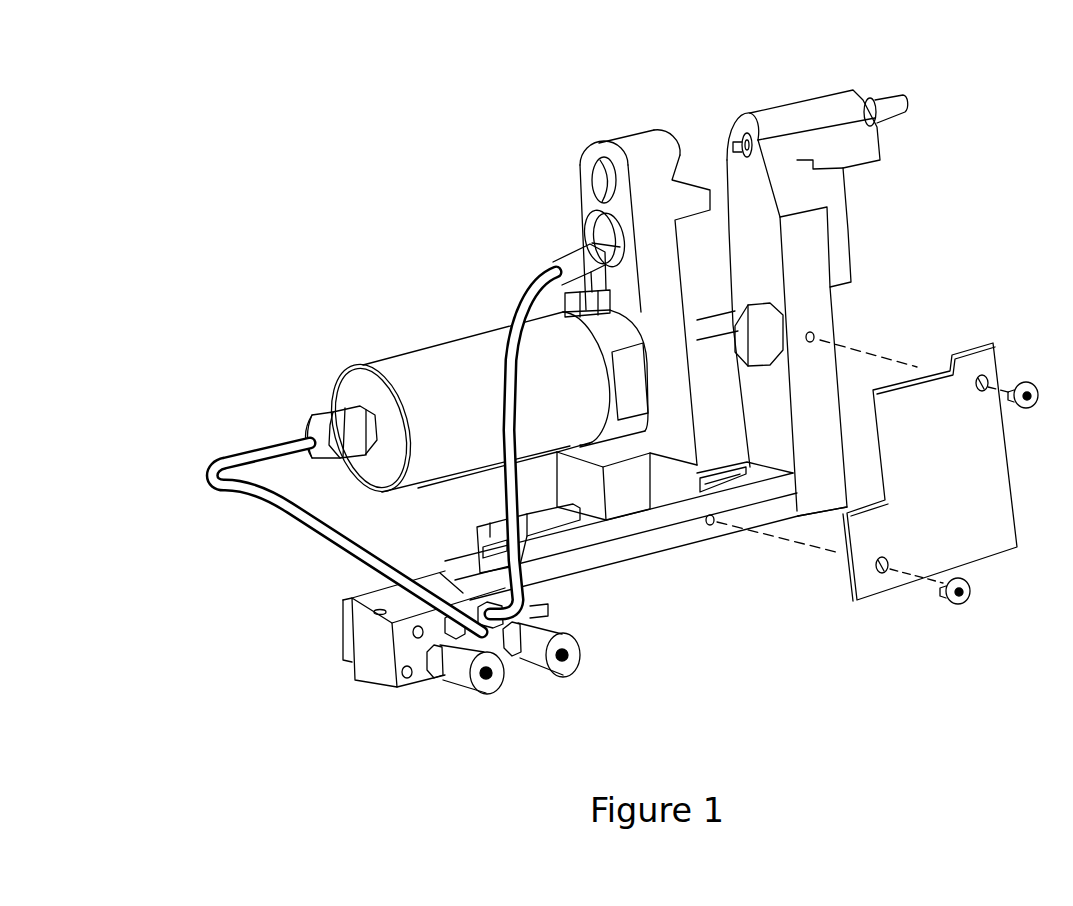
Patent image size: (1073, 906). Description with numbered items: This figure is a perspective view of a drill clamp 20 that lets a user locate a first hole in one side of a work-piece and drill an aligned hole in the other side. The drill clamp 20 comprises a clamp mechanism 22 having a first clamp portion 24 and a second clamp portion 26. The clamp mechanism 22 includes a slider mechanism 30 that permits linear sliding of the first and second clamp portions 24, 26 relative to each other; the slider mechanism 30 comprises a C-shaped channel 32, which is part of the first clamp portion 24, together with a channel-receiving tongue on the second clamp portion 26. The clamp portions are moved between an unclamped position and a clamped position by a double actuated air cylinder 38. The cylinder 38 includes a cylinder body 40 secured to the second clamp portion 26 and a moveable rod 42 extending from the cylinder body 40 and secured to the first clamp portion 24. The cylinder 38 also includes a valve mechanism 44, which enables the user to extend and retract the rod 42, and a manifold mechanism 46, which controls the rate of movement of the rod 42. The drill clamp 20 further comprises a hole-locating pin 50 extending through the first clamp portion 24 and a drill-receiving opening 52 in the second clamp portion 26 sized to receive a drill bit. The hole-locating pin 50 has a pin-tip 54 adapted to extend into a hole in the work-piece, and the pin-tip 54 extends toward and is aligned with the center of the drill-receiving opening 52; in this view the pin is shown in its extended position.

The drill clamp 20 is at (235, 200).
The clamp mechanism 22 is at (668, 568).
The first clamp portion 24 is at (755, 106).
The second clamp portion 26 is at (598, 122).
The slider mechanism 30 is at (550, 500).
The C-shaped channel 32 is at (597, 555).
The double actuated air cylinder 38 is at (395, 341).
The cylinder body 40 is at (458, 345).
The moveable rod 42 is at (702, 333).
The valve mechanism 44 is at (345, 618).
The manifold mechanism 46 is at (420, 686).
The hole-locating pin 50 is at (751, 107).
The drill-receiving opening 52 is at (600, 180).
The pin-tip 54 is at (730, 148).